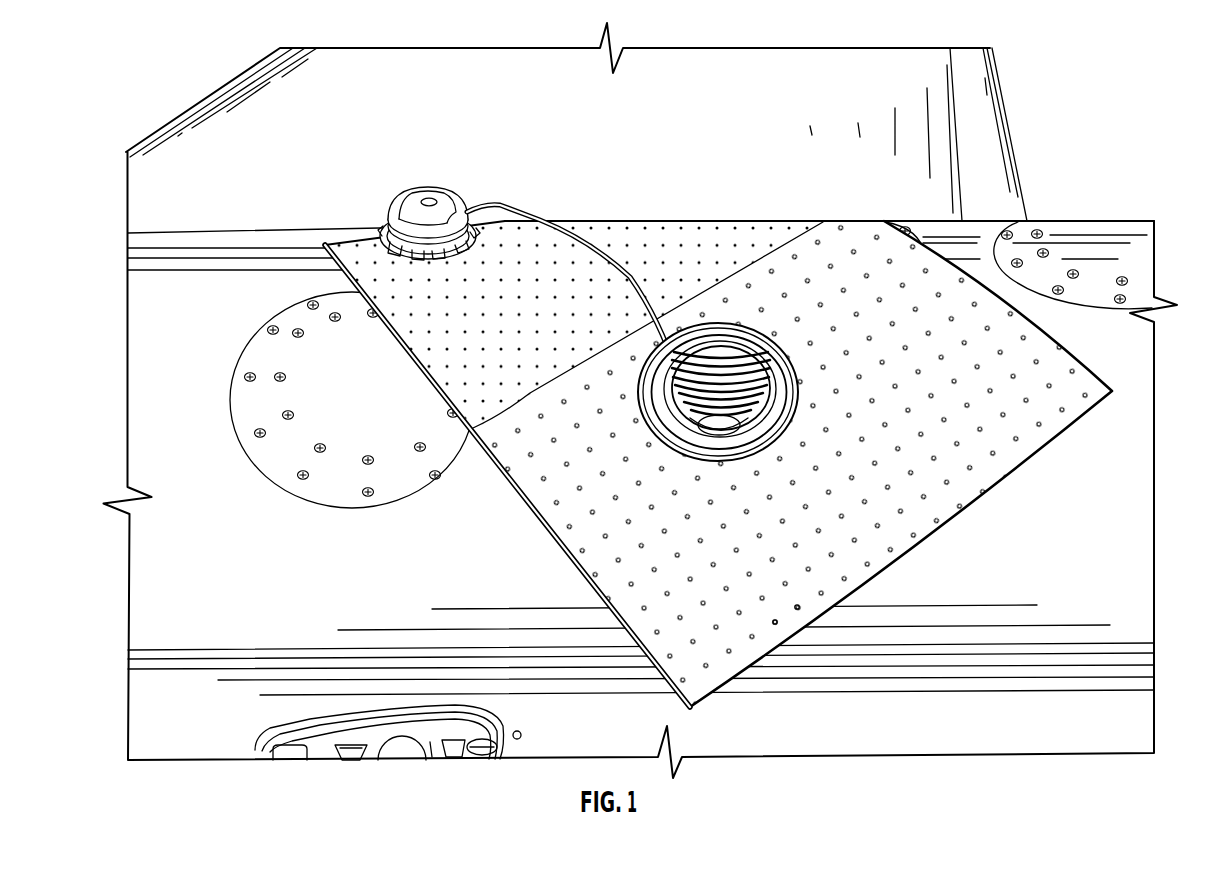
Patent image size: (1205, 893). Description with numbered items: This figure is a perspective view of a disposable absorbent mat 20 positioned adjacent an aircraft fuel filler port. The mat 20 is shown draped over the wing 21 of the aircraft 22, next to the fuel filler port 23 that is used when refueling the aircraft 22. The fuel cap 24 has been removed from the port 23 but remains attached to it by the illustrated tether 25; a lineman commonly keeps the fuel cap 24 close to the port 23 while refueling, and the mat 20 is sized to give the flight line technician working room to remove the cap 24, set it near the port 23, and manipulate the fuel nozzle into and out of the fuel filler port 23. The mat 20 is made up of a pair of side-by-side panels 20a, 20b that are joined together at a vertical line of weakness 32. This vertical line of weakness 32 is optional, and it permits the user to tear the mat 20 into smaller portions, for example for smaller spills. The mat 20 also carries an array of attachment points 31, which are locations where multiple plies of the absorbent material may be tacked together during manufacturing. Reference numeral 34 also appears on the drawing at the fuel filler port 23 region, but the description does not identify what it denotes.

The disposable absorbent mat 20 is at (713, 472).
The panel 20a is at (528, 478).
The panel 20b is at (374, 292).
The wing 21 is at (1011, 143).
The aircraft 22 is at (1030, 85).
The fuel filler port 23 is at (864, 314).
The fuel cap 24 is at (415, 268).
The tether 25 is at (530, 225).
The attachment points 31 is at (797, 611).
The vertical line of weakness 32 is at (520, 400).
The threads of drain insert 34 is at (760, 355).